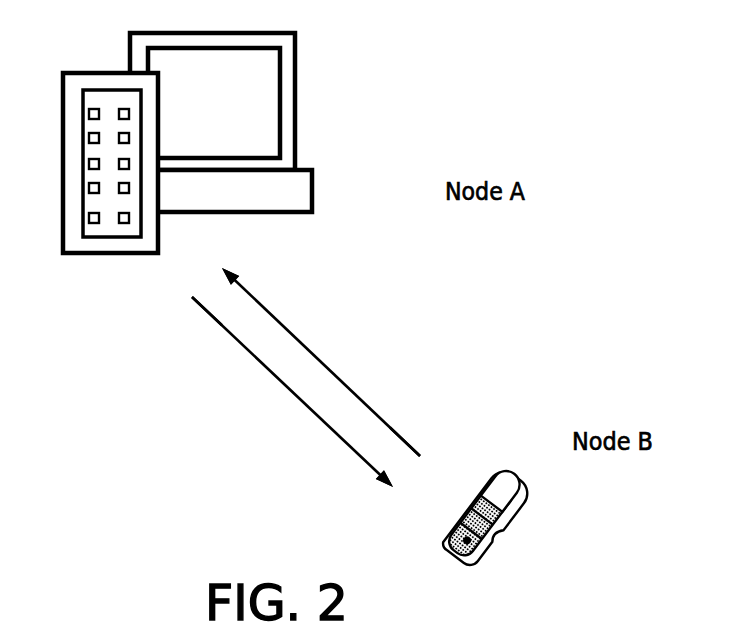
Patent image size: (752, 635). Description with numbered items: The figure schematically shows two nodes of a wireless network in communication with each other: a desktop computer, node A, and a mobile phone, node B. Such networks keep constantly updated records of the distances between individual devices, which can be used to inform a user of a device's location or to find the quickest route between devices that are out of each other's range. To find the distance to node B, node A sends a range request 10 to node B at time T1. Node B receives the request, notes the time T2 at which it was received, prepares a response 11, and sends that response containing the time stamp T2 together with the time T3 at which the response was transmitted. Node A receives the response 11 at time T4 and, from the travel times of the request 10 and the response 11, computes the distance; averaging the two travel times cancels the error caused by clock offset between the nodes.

The range request 10 is at (302, 398).
The response 11 is at (332, 370).
The time the range request is sent T1 is at (158, 303).
The time the request was received T2 is at (382, 508).
The time the response was transmitted T3 is at (428, 441).
The time the response is received T4 is at (264, 266).